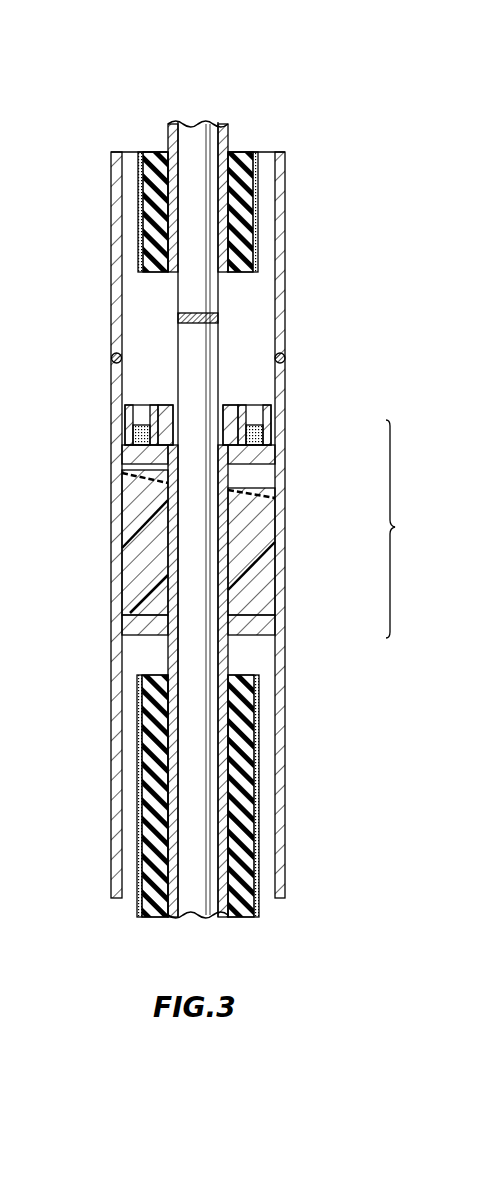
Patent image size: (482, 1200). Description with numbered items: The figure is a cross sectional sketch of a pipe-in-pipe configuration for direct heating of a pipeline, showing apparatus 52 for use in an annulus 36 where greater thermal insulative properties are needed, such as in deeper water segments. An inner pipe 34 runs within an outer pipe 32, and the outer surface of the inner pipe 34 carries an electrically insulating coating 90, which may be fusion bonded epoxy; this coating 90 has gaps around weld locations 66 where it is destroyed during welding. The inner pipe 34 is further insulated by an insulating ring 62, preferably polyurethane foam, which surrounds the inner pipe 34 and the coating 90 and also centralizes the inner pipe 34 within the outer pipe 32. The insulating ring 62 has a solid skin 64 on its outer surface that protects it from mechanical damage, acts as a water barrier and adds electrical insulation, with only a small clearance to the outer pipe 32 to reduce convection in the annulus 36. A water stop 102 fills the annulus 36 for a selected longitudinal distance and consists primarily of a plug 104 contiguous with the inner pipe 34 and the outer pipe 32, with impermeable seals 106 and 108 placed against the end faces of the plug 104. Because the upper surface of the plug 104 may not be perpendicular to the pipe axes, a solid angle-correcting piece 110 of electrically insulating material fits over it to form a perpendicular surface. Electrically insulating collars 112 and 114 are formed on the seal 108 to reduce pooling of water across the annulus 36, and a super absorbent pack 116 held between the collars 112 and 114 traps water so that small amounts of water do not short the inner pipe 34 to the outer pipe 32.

The apparatus 52 is at (113, 73).
The electrically insulating coating 90 is at (232, 128).
The insulating ring 62 is at (253, 206).
The solid skin 64 is at (258, 229).
The weld locations 66 is at (221, 318).
The electrically insulating collar 112 is at (265, 418).
The electrically insulating collar 114 is at (264, 432).
The super absorbent pack 116 is at (130, 430).
The impermeable seal 108 is at (125, 458).
The solid angle-correcting piece 110 is at (250, 478).
The water stop 102 is at (396, 527).
The plug 104 is at (250, 548).
The impermeable seal 106 is at (138, 627).
The annulus 36 is at (267, 692).
The inner pipe 34 is at (210, 768).
The outer pipe 32 is at (287, 848).